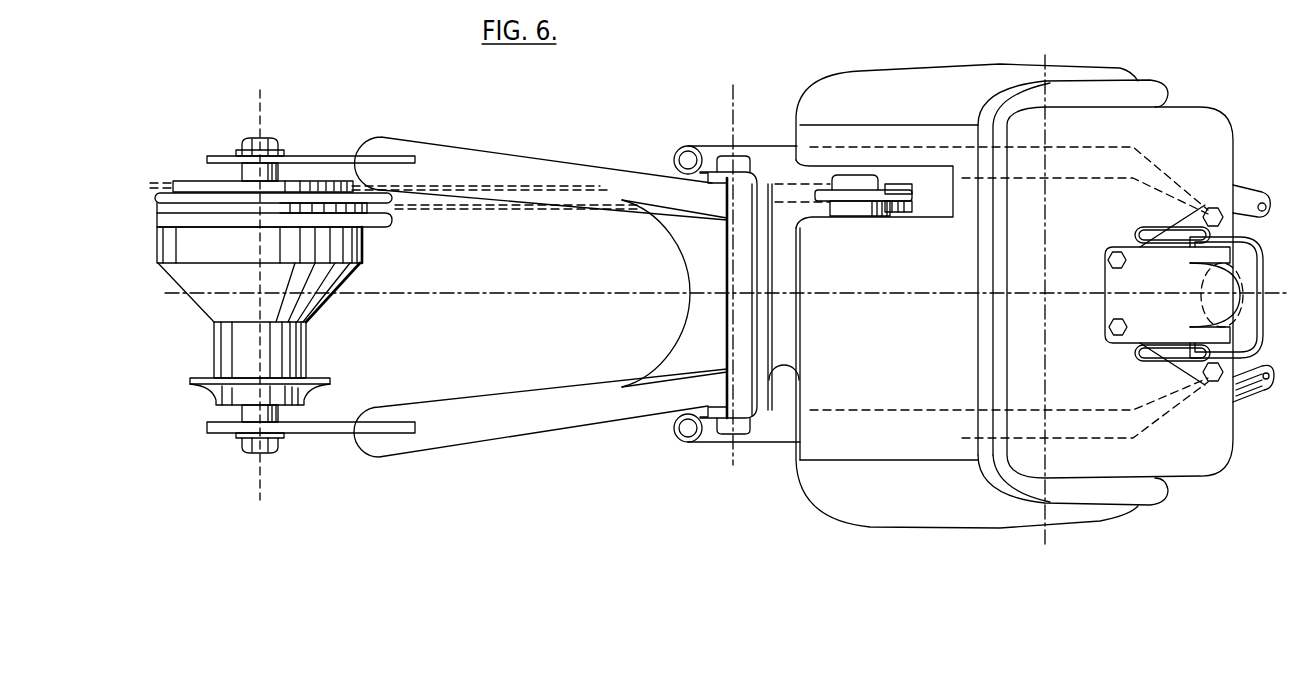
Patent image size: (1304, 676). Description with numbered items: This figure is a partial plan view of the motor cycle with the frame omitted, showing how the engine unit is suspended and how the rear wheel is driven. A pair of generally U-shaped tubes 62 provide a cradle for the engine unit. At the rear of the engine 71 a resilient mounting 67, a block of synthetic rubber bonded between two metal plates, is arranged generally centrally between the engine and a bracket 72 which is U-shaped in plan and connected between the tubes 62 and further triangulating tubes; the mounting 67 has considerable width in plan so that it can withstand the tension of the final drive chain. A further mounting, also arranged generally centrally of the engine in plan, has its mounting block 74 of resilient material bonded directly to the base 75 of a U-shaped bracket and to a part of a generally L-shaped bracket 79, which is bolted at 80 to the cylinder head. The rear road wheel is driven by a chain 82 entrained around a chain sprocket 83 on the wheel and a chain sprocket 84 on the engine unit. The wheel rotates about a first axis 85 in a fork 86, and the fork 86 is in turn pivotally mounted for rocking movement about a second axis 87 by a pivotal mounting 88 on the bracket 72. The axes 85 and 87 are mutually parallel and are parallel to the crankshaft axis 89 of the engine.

The U-shaped tubes 62 is at (1250, 205).
The resilient mounting 67 is at (778, 342).
The rear of the engine 71 is at (800, 276).
The bracket 72 is at (764, 392).
The mounting block 74 is at (1215, 294).
The base 75 is at (1200, 337).
The L-shaped bracket 79 is at (1168, 296).
The bolts 80 is at (1213, 207).
The chain 82 is at (468, 204).
The chain sprocket 83 is at (188, 198).
The chain sprocket 84 is at (878, 202).
The first axis 85 is at (265, 486).
The fork 86 is at (467, 297).
The second axis 87 is at (733, 103).
The pivotal mounting 88 is at (748, 442).
The crankshaft axis 89 is at (1043, 540).